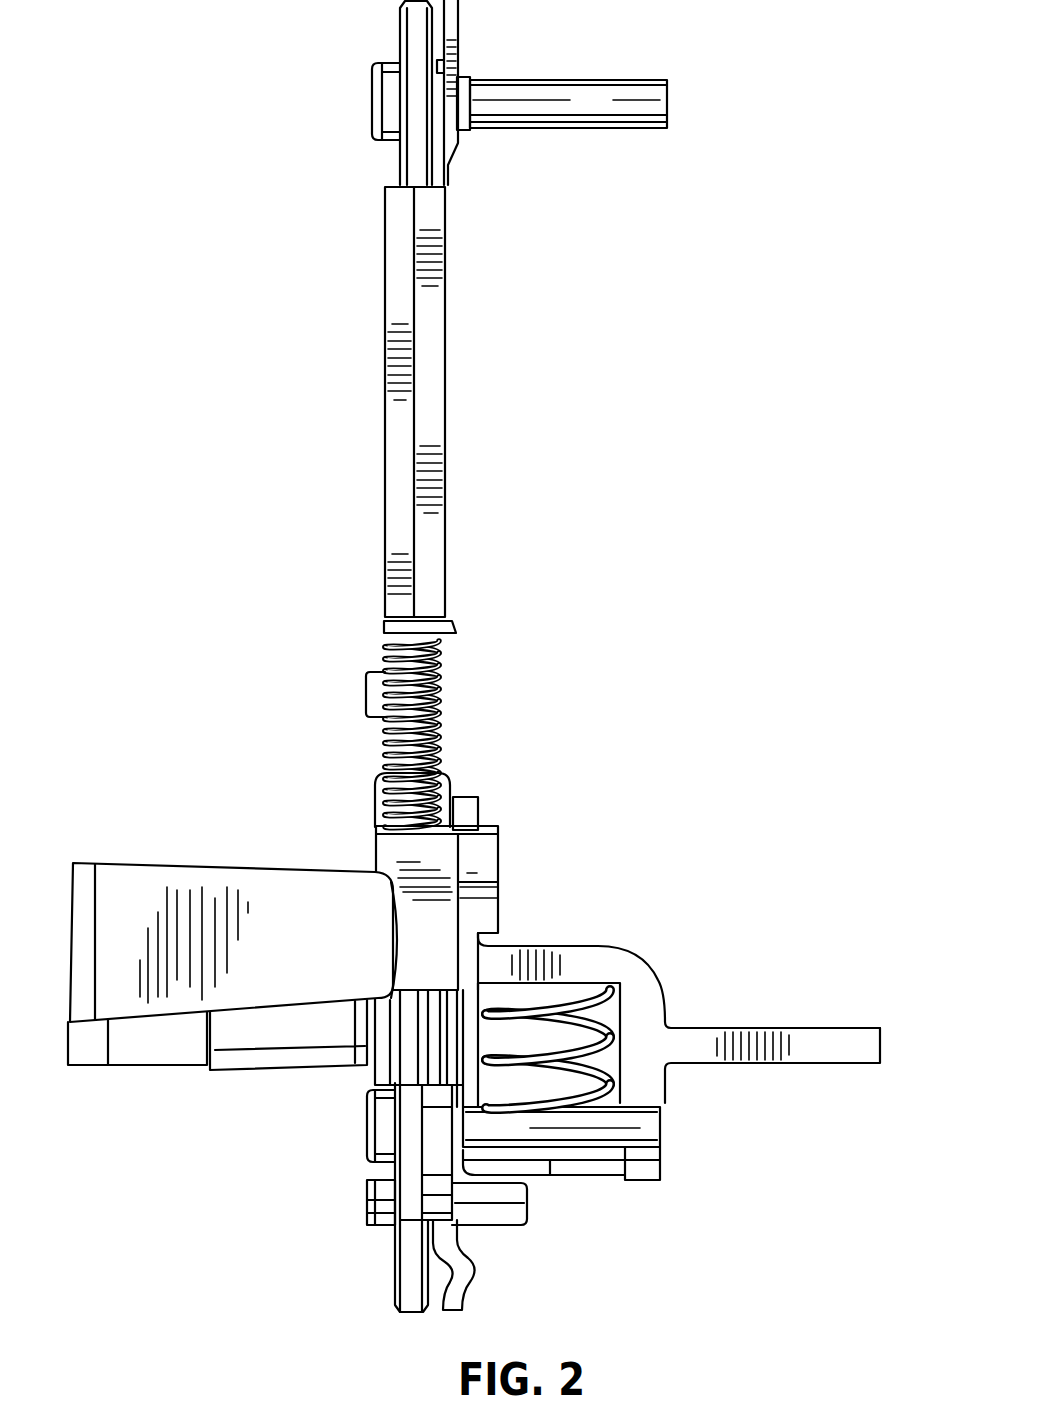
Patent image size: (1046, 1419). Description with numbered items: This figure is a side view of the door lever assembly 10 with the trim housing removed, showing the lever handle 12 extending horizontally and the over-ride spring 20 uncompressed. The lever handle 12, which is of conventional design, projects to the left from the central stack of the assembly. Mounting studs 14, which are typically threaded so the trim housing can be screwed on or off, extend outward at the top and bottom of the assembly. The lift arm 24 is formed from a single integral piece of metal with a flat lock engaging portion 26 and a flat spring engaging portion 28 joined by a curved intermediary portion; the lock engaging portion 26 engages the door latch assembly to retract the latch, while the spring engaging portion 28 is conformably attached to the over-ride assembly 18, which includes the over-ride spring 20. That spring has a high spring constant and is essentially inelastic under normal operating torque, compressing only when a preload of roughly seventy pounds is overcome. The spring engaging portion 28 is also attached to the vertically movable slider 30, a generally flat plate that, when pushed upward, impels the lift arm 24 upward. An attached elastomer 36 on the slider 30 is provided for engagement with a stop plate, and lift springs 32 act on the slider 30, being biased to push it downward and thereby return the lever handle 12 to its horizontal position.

The door lever assembly 10 is at (800, 217).
The lever handle 12 is at (214, 854).
The mounting studs 14 is at (622, 67).
The over-ride assembly 18 is at (696, 911).
The over-ride spring 20 is at (626, 984).
The lift arm 24 is at (838, 1019).
The lock engaging portion 26 is at (819, 1082).
The spring engaging portion 28 is at (583, 930).
The slider 30 is at (512, 863).
The lift springs 32 is at (465, 721).
The elastomer 36 is at (494, 786).